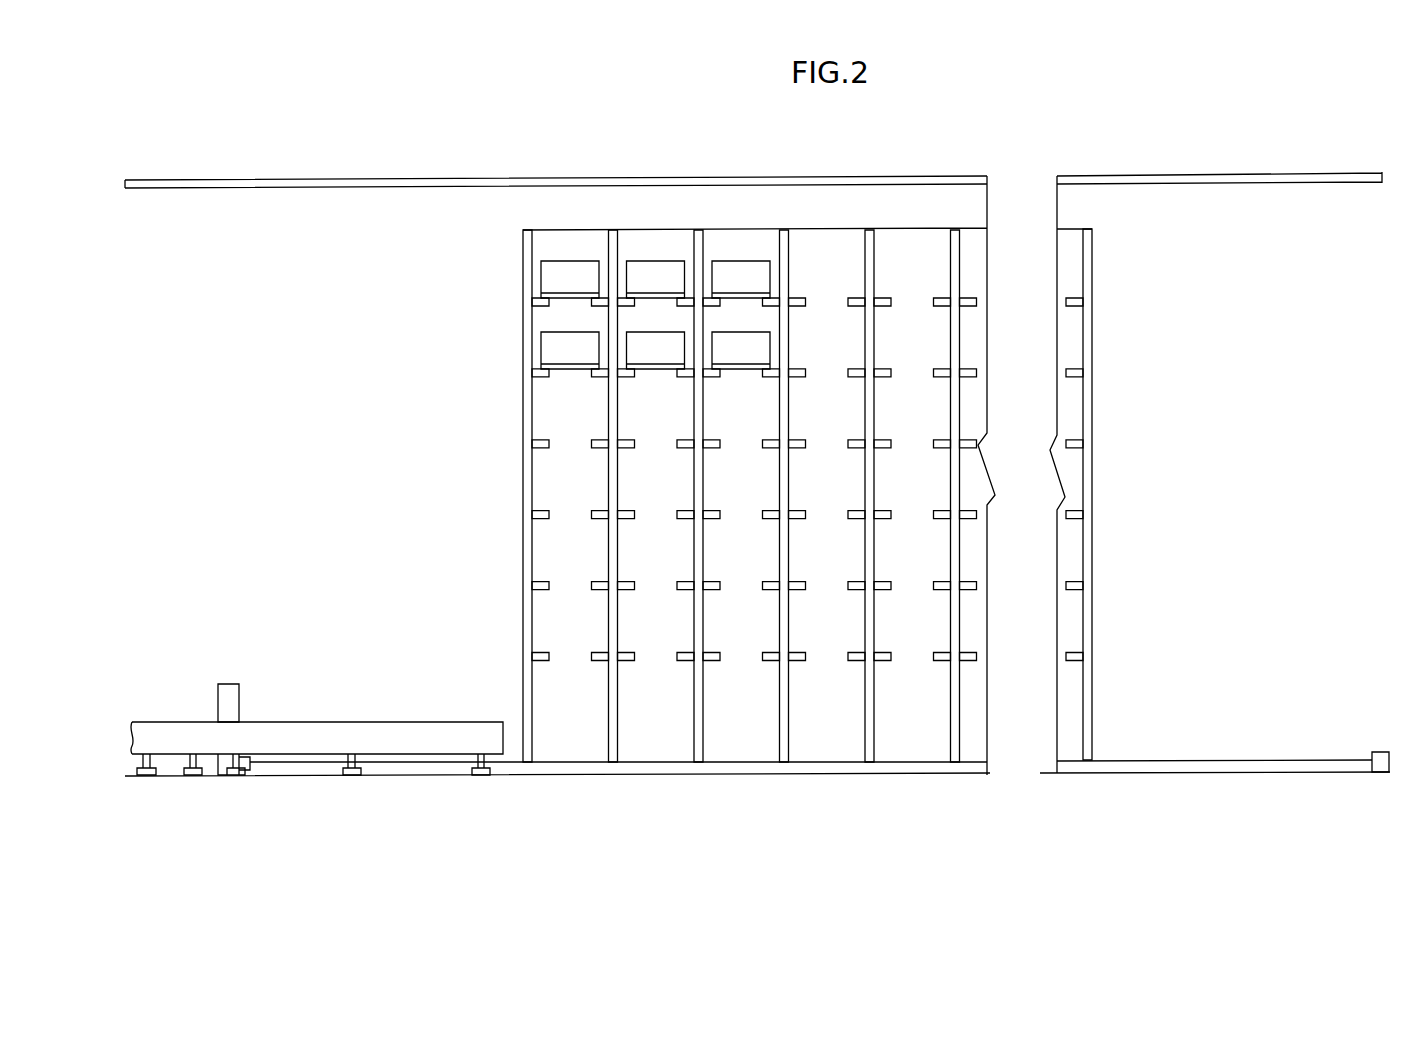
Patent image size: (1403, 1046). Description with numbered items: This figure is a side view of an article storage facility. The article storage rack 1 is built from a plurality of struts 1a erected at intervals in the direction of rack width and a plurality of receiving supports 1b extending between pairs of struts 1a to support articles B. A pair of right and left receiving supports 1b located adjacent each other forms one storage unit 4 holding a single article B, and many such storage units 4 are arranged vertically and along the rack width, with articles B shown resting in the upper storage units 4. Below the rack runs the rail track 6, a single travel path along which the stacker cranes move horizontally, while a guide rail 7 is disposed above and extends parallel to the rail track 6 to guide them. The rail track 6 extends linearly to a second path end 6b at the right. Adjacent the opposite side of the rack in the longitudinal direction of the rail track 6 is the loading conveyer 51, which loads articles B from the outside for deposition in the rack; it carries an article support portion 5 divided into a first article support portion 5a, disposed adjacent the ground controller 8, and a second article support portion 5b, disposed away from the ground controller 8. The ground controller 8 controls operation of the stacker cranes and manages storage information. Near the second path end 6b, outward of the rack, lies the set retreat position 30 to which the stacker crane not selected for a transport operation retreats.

The article storage rack 1 is at (829, 471).
The strut 1a is at (532, 712).
The receiving support 1b is at (847, 448).
The storage unit 4 is at (853, 408).
The article B is at (717, 272).
The article support portion 5 is at (317, 711).
The first article support portion 5a is at (304, 709).
The second article support portion 5b is at (431, 705).
The loading conveyer 51 is at (282, 745).
The rail track 6 is at (625, 766).
The second path end 6b is at (1380, 758).
The guide rail 7 is at (362, 178).
The ground controller 8 is at (228, 692).
The set retreat position 30 is at (1203, 737).